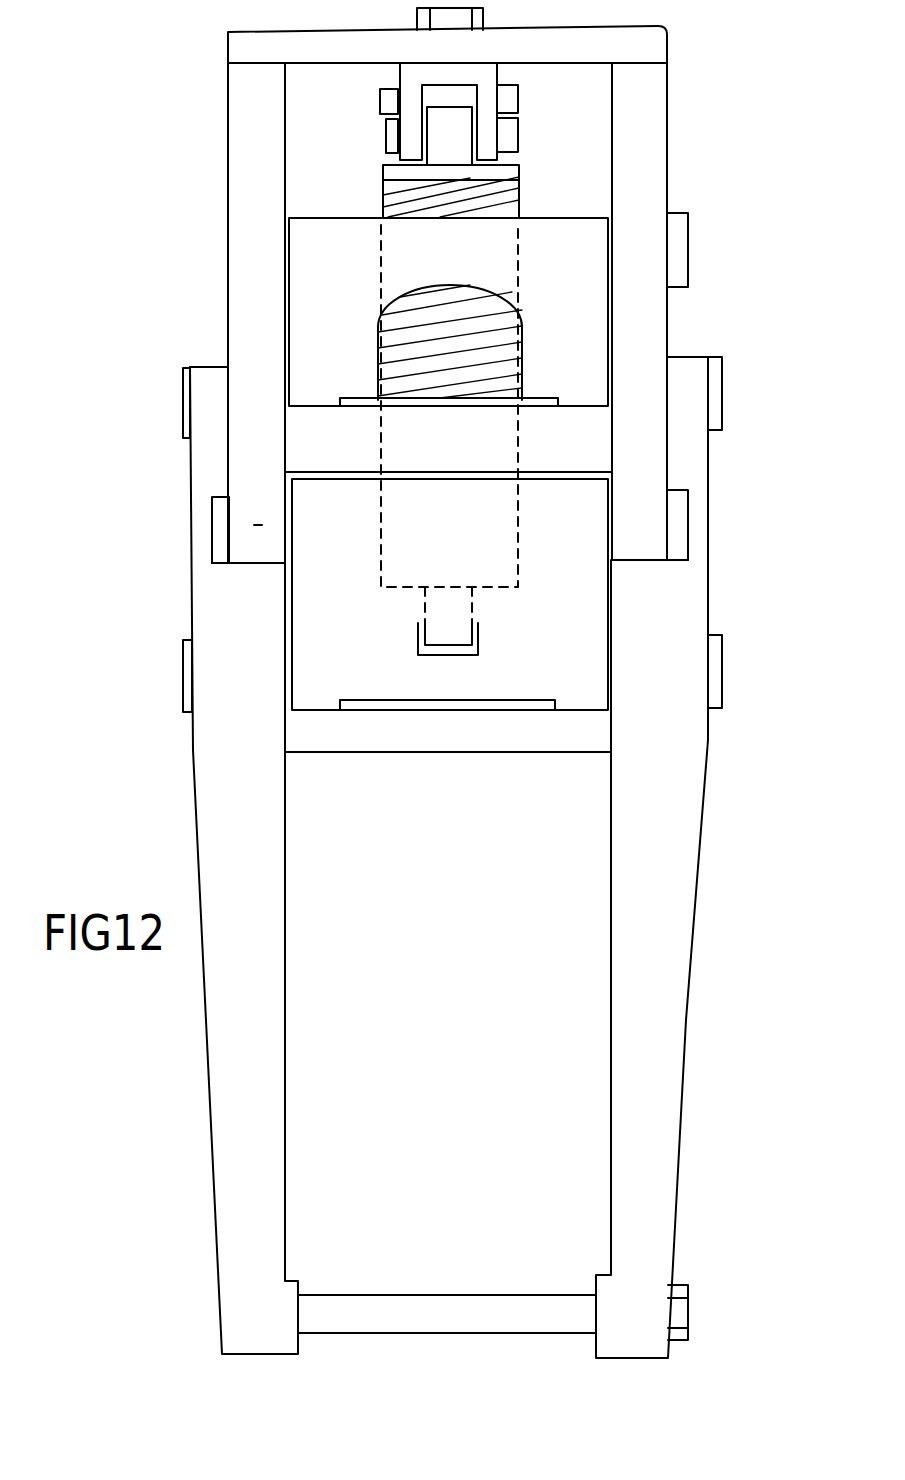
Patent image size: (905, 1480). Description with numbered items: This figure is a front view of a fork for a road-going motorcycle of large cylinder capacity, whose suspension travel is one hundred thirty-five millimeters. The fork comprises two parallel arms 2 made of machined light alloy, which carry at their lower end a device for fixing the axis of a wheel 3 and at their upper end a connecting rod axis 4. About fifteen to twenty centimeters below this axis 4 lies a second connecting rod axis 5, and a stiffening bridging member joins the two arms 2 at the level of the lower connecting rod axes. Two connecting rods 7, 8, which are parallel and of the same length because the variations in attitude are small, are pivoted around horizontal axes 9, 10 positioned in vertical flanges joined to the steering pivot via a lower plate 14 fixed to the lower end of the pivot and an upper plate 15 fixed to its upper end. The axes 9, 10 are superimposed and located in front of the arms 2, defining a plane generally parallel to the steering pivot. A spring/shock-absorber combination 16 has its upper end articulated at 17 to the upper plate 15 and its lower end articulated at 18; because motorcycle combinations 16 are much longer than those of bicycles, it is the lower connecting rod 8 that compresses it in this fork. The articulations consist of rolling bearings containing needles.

The arms 2 is at (670, 862).
The axis of a wheel 3 is at (560, 1311).
The connecting rod axis 4 is at (717, 415).
The second connecting rod axis 5 is at (715, 688).
The connecting rod 7 is at (578, 305).
The connecting rod 8 is at (572, 593).
The horizontal axis 9 is at (673, 255).
The horizontal axis 10 is at (675, 528).
The lower plate 14 is at (575, 450).
The upper plate 15 is at (630, 46).
The spring/shock-absorber combination 16 is at (493, 190).
The articulation 17 is at (503, 136).
The articulation 18 is at (452, 635).